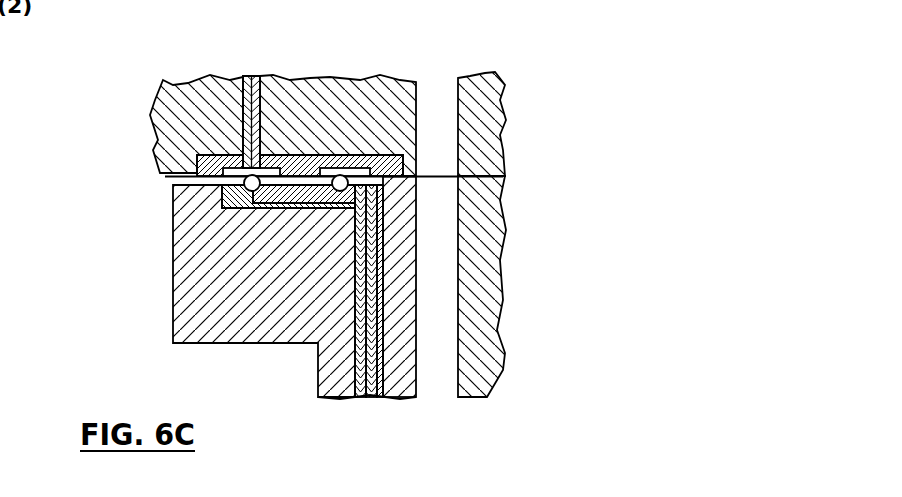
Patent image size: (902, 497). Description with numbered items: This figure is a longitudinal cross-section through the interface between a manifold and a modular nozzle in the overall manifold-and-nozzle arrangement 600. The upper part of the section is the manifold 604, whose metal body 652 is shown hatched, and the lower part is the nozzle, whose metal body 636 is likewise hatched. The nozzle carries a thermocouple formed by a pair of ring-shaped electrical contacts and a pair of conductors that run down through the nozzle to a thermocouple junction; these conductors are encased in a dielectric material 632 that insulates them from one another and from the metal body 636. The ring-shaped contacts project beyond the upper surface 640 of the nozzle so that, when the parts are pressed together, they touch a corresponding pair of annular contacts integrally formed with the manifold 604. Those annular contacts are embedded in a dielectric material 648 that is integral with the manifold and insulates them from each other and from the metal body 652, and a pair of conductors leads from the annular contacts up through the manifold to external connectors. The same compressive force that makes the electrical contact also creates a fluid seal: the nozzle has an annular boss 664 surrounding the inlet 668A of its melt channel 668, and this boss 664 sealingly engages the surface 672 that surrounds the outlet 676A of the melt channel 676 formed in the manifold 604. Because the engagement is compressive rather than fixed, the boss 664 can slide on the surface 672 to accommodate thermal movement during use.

The assembly 600 is at (580, 201).
The manifold 604 is at (495, 66).
The dielectric material 632 is at (378, 220).
The metal body 636 is at (485, 378).
The upper surface 640 is at (244, 182).
The dielectric material 648 is at (273, 152).
The metal body 652 is at (170, 102).
The annular boss 664 is at (470, 178).
The melt channel 668 is at (433, 393).
The inlet 668A is at (448, 183).
The surface 672 is at (448, 83).
The melt channel 676 is at (428, 190).
The outlet 676A is at (442, 165).